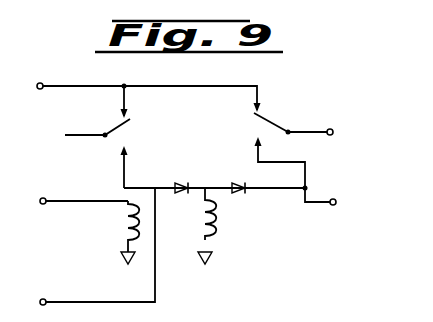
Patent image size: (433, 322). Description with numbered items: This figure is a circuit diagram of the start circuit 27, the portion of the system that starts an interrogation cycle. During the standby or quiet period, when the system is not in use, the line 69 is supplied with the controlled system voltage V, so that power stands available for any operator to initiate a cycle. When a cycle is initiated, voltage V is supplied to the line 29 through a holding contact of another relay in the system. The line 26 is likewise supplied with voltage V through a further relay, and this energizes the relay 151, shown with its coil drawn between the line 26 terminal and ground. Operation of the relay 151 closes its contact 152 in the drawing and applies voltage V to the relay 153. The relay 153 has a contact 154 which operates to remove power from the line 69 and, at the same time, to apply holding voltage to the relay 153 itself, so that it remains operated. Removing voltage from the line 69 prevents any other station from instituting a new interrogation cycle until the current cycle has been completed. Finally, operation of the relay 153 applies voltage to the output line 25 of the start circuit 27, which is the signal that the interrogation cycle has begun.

The line 69 is at (101, 85).
The relay switch contact 152 is at (128, 128).
The contact 154 is at (271, 121).
The start circuit 27 is at (350, 105).
The output line 25 is at (317, 204).
The line 26 is at (44, 205).
The relay 151 is at (123, 225).
The relay 153 is at (214, 217).
The line 29 is at (82, 293).